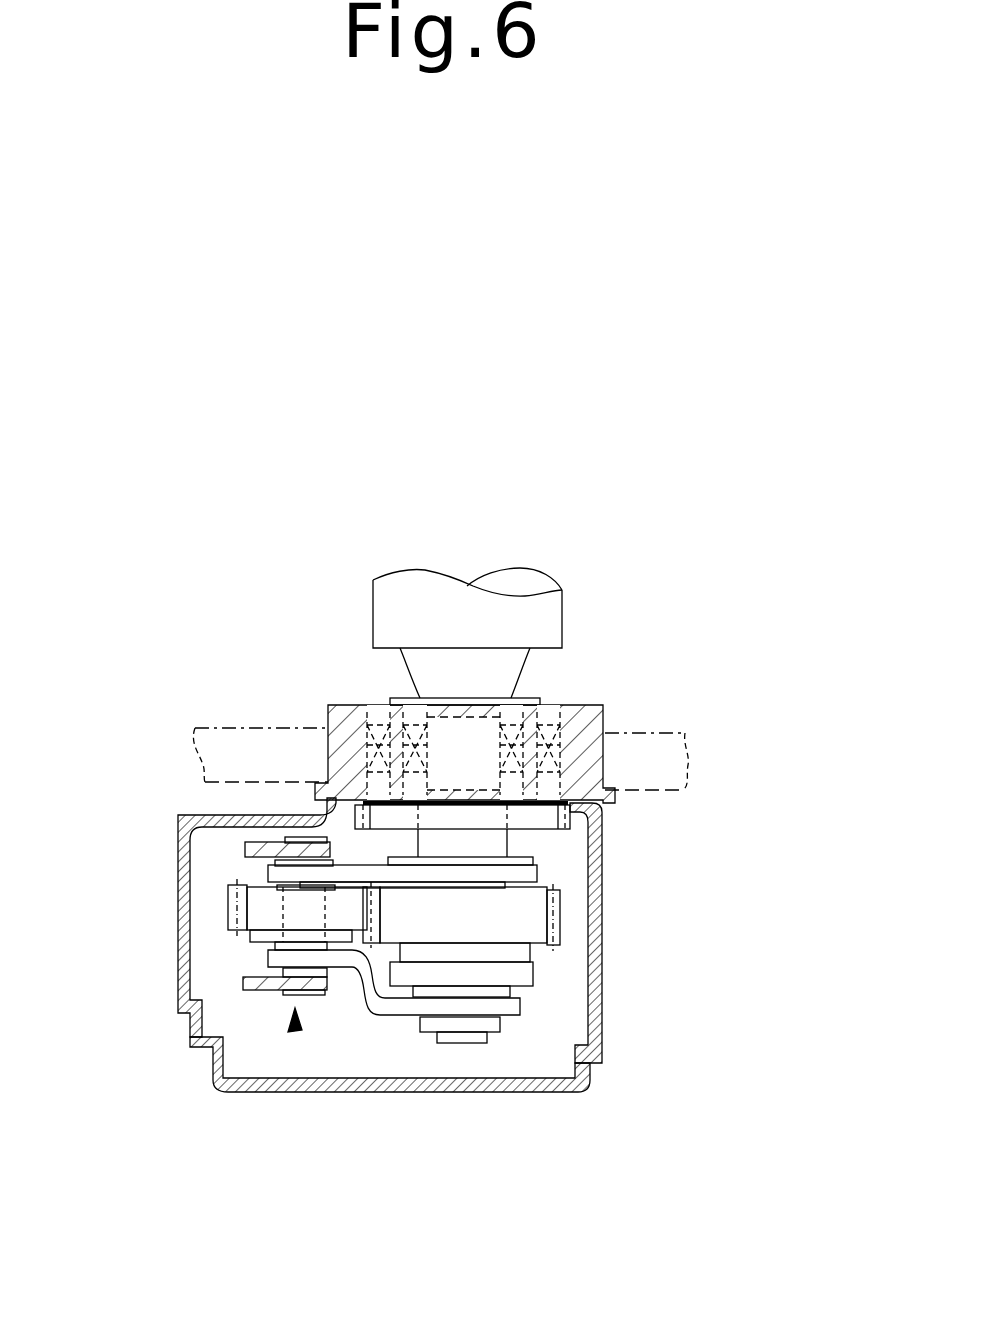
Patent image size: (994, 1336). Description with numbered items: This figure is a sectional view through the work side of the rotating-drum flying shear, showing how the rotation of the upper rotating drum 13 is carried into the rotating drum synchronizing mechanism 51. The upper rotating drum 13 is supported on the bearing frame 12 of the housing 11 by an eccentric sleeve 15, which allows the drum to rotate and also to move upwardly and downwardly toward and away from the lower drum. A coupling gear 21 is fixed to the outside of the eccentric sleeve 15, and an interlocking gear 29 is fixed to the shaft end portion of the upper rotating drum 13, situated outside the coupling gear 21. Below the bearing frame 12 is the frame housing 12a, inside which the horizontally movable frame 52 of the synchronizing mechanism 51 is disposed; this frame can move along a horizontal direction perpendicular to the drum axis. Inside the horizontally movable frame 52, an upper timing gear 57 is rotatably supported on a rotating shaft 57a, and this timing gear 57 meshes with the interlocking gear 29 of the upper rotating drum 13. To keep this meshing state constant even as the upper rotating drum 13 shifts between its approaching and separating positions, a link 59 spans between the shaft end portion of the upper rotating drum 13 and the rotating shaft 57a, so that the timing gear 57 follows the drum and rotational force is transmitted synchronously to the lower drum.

The housing 11 is at (240, 718).
The bearing frame 12 is at (582, 700).
The frame housing 12a is at (597, 990).
The upper rotating drum 13 is at (485, 613).
The eccentric sleeve 15 is at (400, 697).
The coupling gear 21 is at (573, 815).
The interlocking gear 29 is at (560, 920).
The rotating drum synchronizing mechanism 51 is at (295, 1012).
The horizontally movable frame 52 is at (217, 1080).
The upper timing gear 57 is at (257, 916).
The rotating shaft 57a is at (308, 995).
The link 59 is at (518, 875).